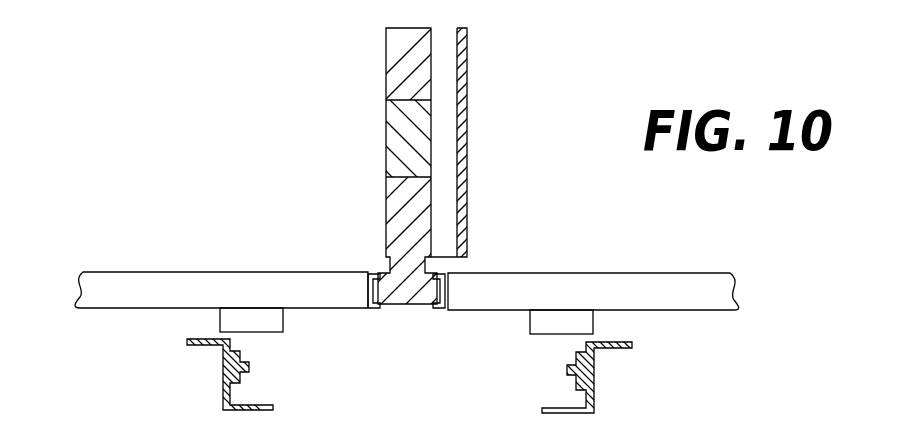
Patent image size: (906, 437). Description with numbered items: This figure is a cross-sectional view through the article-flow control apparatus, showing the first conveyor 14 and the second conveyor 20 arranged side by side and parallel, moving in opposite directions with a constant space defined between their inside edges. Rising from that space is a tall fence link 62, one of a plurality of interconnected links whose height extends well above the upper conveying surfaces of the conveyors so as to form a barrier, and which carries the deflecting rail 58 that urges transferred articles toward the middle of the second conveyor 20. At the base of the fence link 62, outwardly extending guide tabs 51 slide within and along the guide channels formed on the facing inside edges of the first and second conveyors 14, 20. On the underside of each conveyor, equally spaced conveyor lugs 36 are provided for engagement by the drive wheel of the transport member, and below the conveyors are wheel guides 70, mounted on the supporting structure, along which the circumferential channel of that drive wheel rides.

The first conveyor 14 is at (232, 287).
The second conveyor 20 is at (626, 293).
The conveyor lug 36 is at (263, 322).
The guide tab 51 is at (390, 289).
The deflecting rail 58 is at (463, 198).
The fence link 62 is at (400, 226).
The wheel guide 70 is at (218, 364).